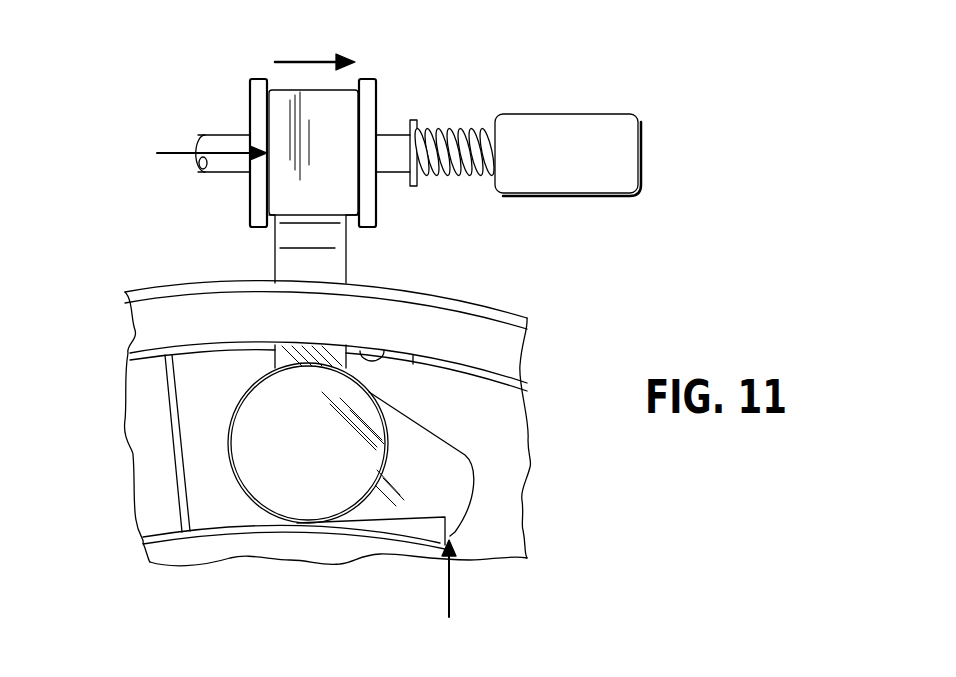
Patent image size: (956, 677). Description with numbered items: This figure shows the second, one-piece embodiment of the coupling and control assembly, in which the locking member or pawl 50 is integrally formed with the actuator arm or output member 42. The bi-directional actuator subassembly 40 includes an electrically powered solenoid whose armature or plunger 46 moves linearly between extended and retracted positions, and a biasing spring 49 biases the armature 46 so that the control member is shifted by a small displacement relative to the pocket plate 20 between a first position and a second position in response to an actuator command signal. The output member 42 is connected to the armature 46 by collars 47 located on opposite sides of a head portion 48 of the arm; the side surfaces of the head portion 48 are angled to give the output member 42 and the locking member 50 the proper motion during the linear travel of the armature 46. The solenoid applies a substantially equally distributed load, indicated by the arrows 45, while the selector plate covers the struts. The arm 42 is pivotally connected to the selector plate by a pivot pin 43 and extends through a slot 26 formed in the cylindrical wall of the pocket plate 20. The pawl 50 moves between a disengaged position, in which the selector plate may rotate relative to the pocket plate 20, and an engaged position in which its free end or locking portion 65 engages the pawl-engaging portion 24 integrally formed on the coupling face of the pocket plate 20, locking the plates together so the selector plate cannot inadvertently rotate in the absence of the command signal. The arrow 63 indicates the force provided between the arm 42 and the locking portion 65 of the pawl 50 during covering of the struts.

The pocket plate 20 is at (466, 296).
The locking member engaging portion 24 is at (375, 542).
The slot 26 is at (392, 348).
The bi-directional actuator subassembly 40 is at (475, 96).
The output member or actuator arm 42 is at (352, 263).
The pivot pin 43 is at (283, 520).
The arrows indicating load or force 45 is at (180, 152).
The armature or plunger 46 is at (392, 135).
The collars 47 is at (257, 79).
The head portion 48 is at (313, 190).
The biasing spring 49 is at (447, 177).
The one-way locking member or pawl 50 is at (429, 426).
The arrow indicating spring load or force 63 is at (449, 597).
The free end or locking portion 65 is at (453, 536).